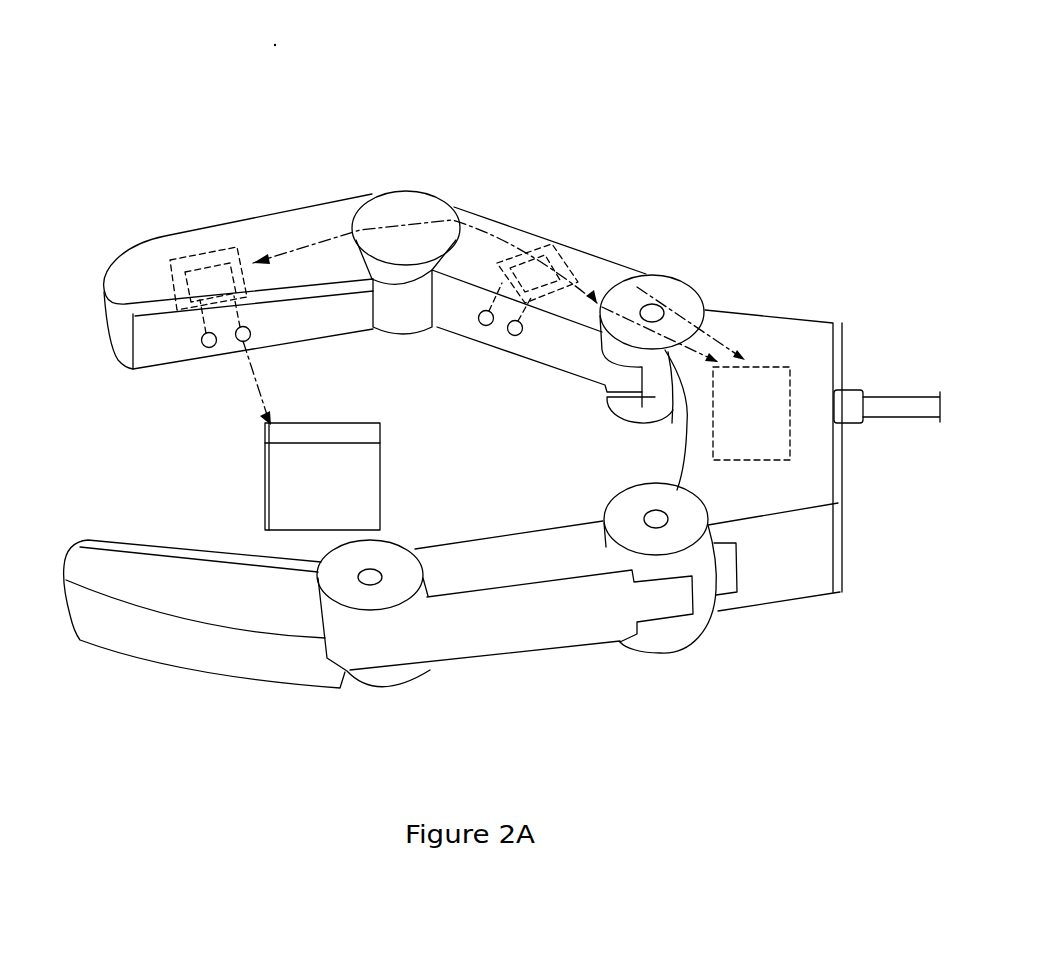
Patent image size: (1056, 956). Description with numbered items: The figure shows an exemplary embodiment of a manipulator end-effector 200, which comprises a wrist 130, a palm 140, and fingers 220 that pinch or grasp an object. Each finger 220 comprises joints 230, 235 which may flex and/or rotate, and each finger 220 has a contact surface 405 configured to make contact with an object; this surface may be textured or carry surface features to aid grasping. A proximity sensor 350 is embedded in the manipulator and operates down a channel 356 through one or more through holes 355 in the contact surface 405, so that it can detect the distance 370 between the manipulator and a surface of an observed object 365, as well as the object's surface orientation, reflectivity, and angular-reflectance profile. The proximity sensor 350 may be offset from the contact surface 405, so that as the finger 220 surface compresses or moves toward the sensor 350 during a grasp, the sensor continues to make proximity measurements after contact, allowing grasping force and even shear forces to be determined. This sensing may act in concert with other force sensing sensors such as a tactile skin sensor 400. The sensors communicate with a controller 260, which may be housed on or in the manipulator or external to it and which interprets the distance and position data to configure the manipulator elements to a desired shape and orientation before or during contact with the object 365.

The end-effector 200 is at (960, 162).
The wrist 130 is at (813, 473).
The palm 140 is at (607, 397).
The finger 220 is at (327, 227).
The joint 230 is at (510, 650).
The joint 235 is at (177, 643).
The controller 260 is at (740, 447).
The proximity sensor 350 is at (207, 250).
The through hole 355 is at (247, 335).
The channel 356 is at (238, 307).
The observed object 365 is at (268, 510).
The distance 370 is at (262, 381).
The tactile skin sensor 400 is at (157, 340).
The contact surface 405 is at (143, 343).